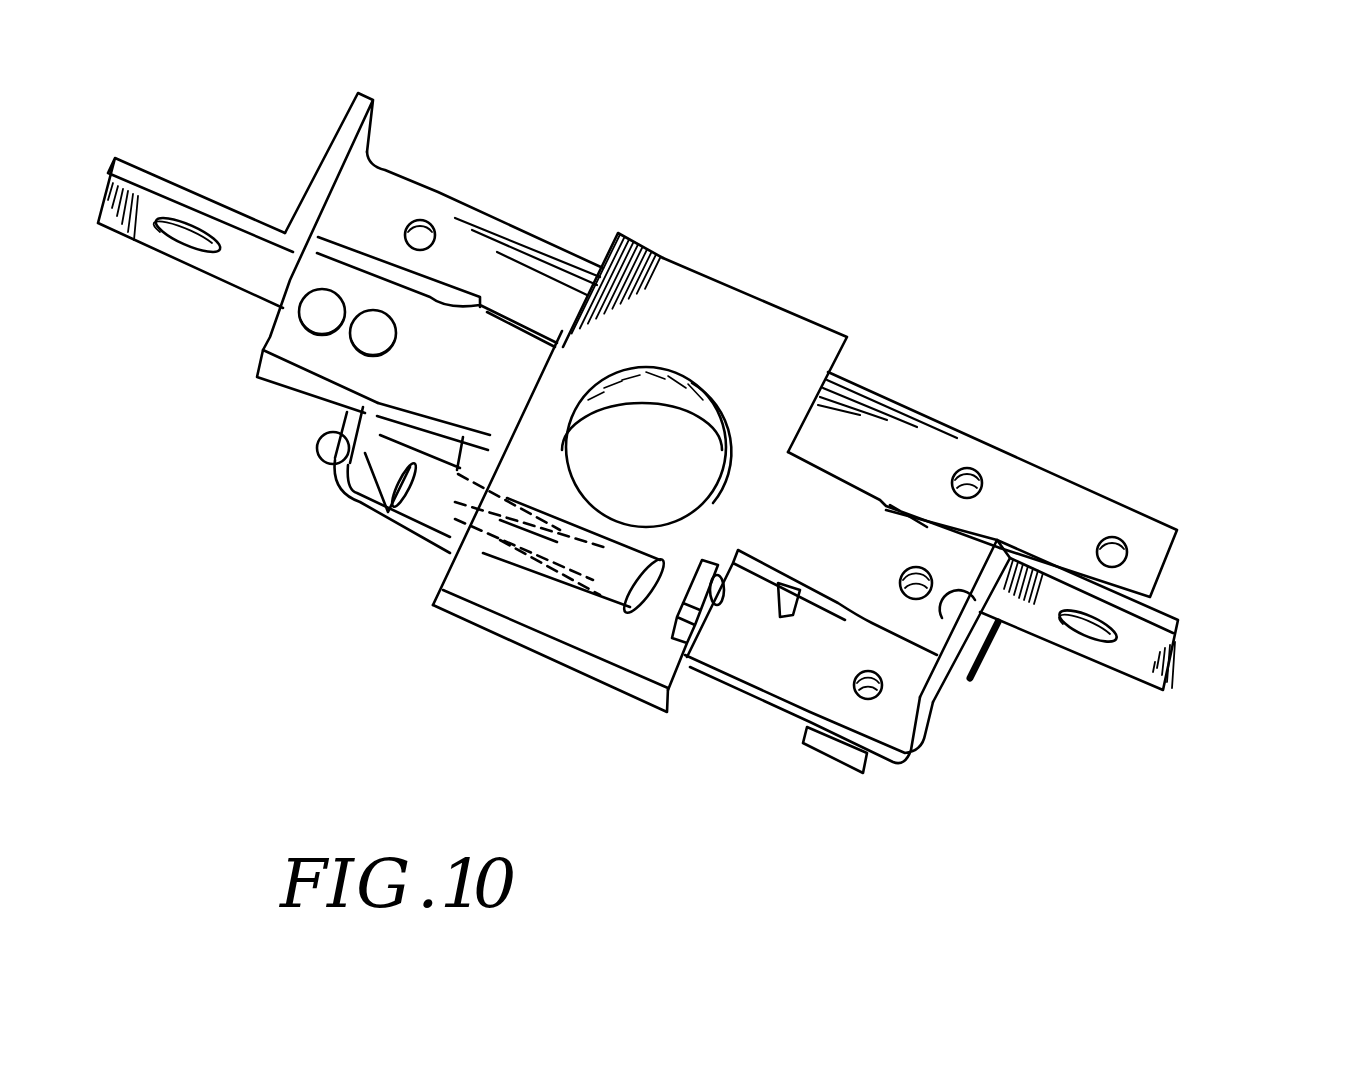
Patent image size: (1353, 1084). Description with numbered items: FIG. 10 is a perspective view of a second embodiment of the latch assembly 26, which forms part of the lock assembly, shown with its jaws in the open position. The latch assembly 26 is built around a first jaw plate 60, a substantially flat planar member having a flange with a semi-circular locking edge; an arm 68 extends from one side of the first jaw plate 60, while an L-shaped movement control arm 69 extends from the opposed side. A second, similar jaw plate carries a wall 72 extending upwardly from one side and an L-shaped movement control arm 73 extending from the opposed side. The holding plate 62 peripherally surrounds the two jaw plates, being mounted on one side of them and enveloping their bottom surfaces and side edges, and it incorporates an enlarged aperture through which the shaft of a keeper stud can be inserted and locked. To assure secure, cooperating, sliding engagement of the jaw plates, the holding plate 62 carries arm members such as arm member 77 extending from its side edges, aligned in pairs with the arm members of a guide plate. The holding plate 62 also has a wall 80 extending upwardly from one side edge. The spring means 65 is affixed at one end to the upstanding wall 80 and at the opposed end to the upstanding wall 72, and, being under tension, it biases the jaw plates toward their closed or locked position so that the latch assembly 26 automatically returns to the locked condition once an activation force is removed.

The latch assembly 26 is at (948, 353).
The first jaw plate 60 is at (460, 262).
The holding plate 62 is at (756, 343).
The spring means 65 is at (530, 570).
The arm 68 is at (1015, 498).
The L-shaped movement control arm 69 is at (1177, 622).
The wall 72 is at (683, 618).
The L-shaped movement control arm 73 is at (200, 193).
The arm member 77 is at (323, 352).
The wall 80 is at (317, 458).